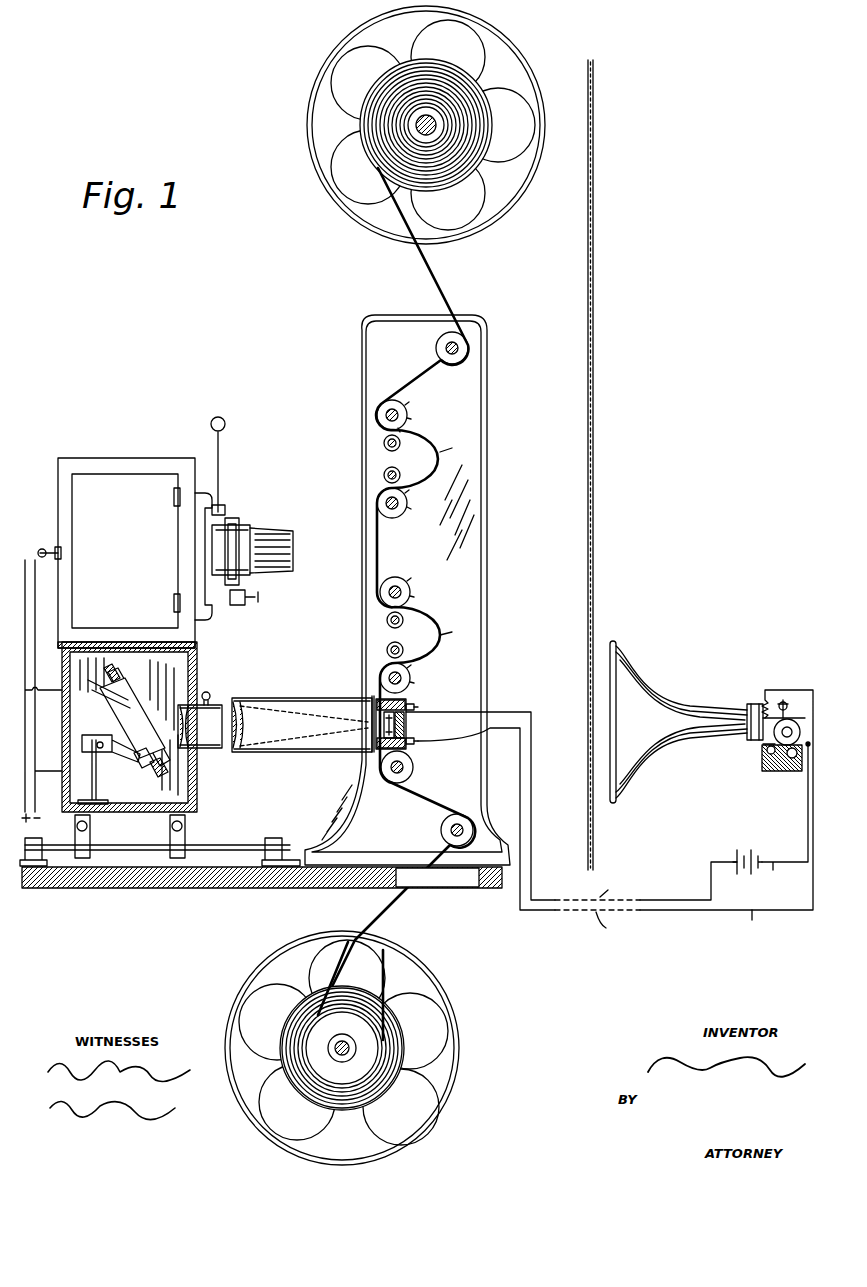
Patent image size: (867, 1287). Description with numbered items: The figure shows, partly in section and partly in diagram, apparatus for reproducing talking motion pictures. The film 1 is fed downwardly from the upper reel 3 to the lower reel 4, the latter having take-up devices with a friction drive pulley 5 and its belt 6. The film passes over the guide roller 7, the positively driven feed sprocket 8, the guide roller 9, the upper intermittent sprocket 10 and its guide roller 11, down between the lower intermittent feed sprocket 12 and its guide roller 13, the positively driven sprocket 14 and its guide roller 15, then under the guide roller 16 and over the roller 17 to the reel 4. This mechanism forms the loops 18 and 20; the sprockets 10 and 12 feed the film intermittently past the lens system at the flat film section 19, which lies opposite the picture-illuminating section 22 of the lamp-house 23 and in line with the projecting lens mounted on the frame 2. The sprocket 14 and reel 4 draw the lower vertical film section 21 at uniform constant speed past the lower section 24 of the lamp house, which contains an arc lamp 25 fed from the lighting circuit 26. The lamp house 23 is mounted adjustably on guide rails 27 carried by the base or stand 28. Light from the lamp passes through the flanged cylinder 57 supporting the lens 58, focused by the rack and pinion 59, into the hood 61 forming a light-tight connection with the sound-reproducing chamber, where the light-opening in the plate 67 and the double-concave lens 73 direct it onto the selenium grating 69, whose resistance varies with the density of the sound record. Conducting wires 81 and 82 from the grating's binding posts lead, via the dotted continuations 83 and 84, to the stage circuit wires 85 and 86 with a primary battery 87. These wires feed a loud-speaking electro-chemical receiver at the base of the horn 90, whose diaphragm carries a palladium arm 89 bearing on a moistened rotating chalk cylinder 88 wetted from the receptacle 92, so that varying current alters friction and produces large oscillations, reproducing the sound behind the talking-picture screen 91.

The film 1 is at (412, 258).
The frame 2 is at (470, 420).
The upper reel 3 is at (528, 64).
The lower reel 4 is at (460, 1048).
The friction drive pulley 5 is at (335, 1030).
The belt 6 is at (335, 952).
The guide roller 7 is at (436, 348).
The positively driven feed sprocket 8 is at (410, 412).
The guide roller 9 is at (399, 446).
The upper intermittent sprocket 10 is at (402, 512).
The guide roller 11 is at (400, 476).
The lower intermittent feed sprocket 12 is at (411, 590).
The guide roller 13 is at (402, 623).
The positively driven sprocket 14 is at (411, 679).
The guide roller 15 is at (403, 651).
The guide roller 16 is at (413, 772).
The roller 17 is at (441, 830).
The loop 18 is at (458, 448).
The film section 19 is at (378, 555).
The loop 20 is at (458, 633).
The film section 21 is at (376, 758).
The picture-illuminating section 22 is at (116, 553).
The lamp-house 23 is at (197, 628).
The lower section of the lamp house 24 is at (129, 727).
The arc lamp 25 is at (123, 769).
The lighting circuit 26 is at (50, 728).
The guide rails 27 is at (125, 846).
The base or stand 28 is at (112, 890).
The flanged cylinder 57 is at (200, 726).
The lens 58 is at (244, 724).
The rack and pinion 59 is at (212, 695).
The hood 61 is at (300, 752).
The plate 67 is at (382, 730).
The selenium cell or grating 69 is at (412, 718).
The double-concave lens 73 is at (418, 742).
The conducting wire 81 is at (532, 788).
The conducting wire 82 is at (521, 790).
The dotted line 83 is at (618, 882).
The dotted line 84 is at (613, 928).
The circuit wire 85 is at (786, 815).
The circuit wire 86 is at (764, 926).
The primary battery 87 is at (745, 873).
The rotating cylinder 88 is at (774, 745).
The arm 89 is at (790, 704).
The horn 90 is at (686, 722).
The talking-picture screen 91 is at (586, 574).
The liquid-containing receptacle 92 is at (770, 771).